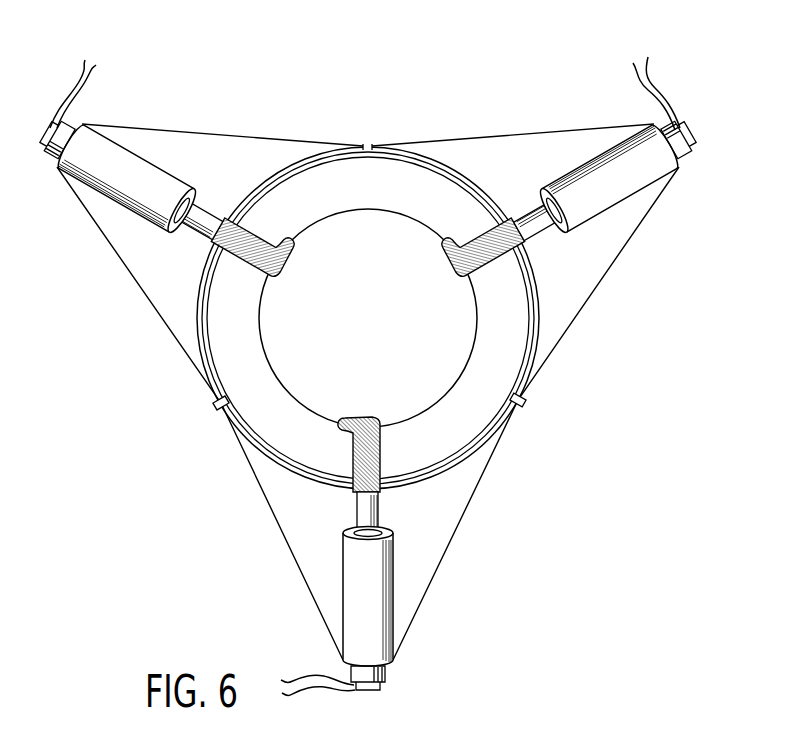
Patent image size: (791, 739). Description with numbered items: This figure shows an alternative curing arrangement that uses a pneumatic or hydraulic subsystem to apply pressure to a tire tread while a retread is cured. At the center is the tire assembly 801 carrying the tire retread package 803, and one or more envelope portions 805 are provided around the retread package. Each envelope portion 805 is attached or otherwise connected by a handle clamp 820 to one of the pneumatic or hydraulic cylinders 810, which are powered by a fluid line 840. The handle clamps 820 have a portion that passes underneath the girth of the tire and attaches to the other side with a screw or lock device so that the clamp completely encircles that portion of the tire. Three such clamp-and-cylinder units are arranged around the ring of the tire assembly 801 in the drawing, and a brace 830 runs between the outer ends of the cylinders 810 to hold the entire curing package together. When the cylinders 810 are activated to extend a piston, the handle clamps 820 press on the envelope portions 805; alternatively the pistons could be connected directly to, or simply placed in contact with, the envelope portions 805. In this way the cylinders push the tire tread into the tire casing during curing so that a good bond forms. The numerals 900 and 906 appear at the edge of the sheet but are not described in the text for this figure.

The tire assembly 801 is at (382, 193).
The tire retread package 803 is at (443, 170).
The envelope portions 805 is at (220, 401).
The pneumatic or hydraulic cylinders 810 is at (142, 158).
The handle clamp 820 is at (252, 236).
The brace 830 is at (470, 505).
The fluid line 840 is at (313, 678).
The system 900 is at (696, 738).
The component 906 is at (553, 733).